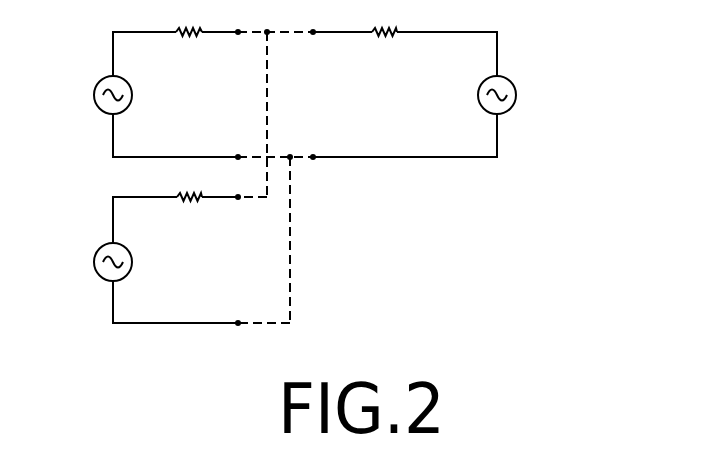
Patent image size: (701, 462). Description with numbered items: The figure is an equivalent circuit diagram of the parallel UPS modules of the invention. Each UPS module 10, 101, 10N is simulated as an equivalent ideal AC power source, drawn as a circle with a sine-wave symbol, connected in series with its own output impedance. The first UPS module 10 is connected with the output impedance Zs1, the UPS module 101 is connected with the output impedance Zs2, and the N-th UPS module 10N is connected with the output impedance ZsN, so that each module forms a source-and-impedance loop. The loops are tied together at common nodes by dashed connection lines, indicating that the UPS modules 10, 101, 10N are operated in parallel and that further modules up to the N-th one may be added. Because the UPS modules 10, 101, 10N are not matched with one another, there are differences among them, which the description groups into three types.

The UPS module 10 is at (88, 95).
The UPS module 101 is at (529, 95).
The UPS module 10N is at (81, 262).
The output impedance Zs1 is at (188, 50).
The output impedance Zs2 is at (383, 50).
The output impedance ZsN is at (189, 216).